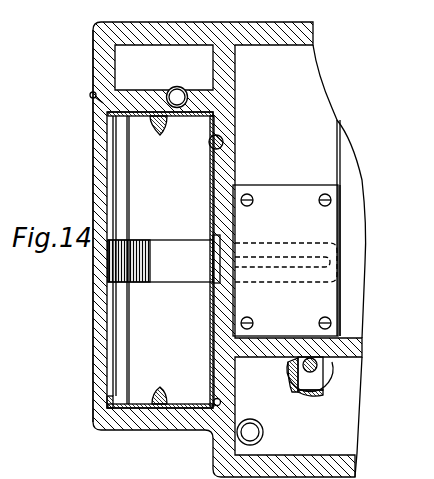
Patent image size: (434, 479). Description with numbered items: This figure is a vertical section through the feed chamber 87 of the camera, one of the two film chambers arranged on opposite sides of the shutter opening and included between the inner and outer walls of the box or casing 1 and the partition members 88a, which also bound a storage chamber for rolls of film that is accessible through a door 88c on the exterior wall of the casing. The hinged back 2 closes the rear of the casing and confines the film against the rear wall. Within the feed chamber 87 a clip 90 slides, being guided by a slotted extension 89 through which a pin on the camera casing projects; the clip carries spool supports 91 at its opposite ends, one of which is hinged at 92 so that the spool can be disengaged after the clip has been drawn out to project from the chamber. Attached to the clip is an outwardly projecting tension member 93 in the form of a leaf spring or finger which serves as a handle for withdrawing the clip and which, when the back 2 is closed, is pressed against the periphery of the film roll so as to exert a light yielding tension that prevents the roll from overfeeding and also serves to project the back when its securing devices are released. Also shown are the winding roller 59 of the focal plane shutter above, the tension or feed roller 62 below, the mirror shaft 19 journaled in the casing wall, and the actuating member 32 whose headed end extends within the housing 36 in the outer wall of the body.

The box or casing 1 is at (291, 47).
The hinged back 2 is at (94, 131).
The winding roller 59 is at (195, 80).
The shaft 19 is at (224, 142).
The partition members 88a is at (236, 166).
The doors 88c is at (359, 209).
The slotted extension 89 is at (289, 258).
The clip 90 is at (211, 175).
The spool supports 91 is at (160, 136).
The feed chamber 87 is at (138, 262).
The tension member 93 is at (164, 259).
The hinge 92 is at (222, 402).
The tension or feed roller 62 is at (264, 430).
The actuating member 32 is at (318, 373).
The housing 36 is at (308, 383).